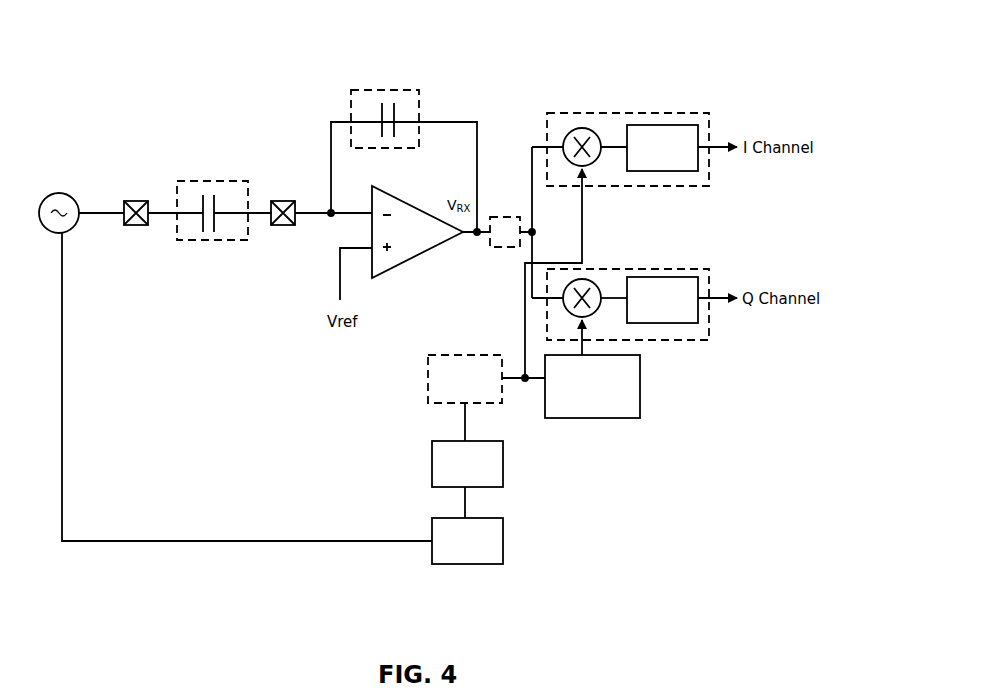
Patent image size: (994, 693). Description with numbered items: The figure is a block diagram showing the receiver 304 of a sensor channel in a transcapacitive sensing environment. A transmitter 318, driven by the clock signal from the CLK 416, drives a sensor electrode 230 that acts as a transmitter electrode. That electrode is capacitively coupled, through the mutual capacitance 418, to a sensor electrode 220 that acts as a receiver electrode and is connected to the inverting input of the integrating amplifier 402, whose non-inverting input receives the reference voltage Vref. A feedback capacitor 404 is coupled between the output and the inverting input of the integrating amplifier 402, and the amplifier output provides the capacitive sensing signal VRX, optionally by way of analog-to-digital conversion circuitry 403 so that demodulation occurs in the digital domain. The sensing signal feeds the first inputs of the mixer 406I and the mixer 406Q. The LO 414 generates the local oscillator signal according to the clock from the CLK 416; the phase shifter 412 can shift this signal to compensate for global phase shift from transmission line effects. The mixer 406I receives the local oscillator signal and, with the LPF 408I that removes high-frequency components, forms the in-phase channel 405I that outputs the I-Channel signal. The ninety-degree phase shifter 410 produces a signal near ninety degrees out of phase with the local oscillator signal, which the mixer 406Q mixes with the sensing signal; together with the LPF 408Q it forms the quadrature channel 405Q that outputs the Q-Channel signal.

The receiver 304 is at (534, 69).
The transmitter 318 is at (77, 230).
The sensor electrode 230 is at (136, 225).
The capacitance 418 is at (212, 181).
The sensor electrode 220 is at (283, 225).
The feedback capacitor 404 is at (419, 95).
The integrating amplifier 402 is at (427, 250).
The analog-to-digital conversion circuitry 403 is at (497, 247).
The in-phase (I) channel 405I is at (675, 113).
The mixer 406I is at (575, 126).
The low-pass filter (LPF) 408I is at (670, 171).
The quadrature (Q) channel 405Q is at (693, 269).
The mixer 406Q is at (592, 280).
The low-pass filter (LPF) 408Q is at (675, 323).
The phase shifter 412 is at (443, 355).
The 90° phase shifter 410 is at (610, 418).
The local oscillator (LO) 414 is at (504, 463).
The CLK 416 is at (504, 541).